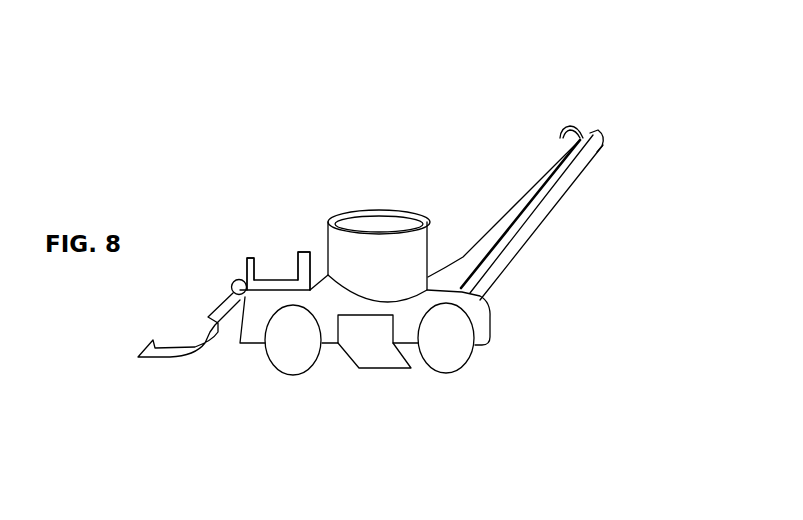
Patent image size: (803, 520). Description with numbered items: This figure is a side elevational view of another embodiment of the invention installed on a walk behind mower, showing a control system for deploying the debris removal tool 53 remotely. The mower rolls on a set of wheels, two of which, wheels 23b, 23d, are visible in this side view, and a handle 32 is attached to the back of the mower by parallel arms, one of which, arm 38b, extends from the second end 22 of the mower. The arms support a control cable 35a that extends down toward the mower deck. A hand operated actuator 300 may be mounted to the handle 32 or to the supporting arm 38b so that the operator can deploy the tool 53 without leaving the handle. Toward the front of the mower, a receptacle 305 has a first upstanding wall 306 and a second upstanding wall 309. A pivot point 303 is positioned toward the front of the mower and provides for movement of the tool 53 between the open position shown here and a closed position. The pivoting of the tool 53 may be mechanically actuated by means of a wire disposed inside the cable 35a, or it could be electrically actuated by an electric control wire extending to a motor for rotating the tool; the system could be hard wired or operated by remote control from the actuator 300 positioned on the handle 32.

The second end 22 is at (495, 322).
The wheel 23b is at (297, 356).
The wheel 23d is at (450, 352).
The handle 32 is at (594, 128).
The control cable 35a is at (485, 237).
The arm 38b is at (565, 174).
The tool 53 is at (170, 357).
The hand operated actuator 300 is at (571, 126).
The pivot point 303 is at (238, 296).
The receptacle 305 is at (267, 238).
The first upstanding wall 306 is at (248, 258).
The second upstanding wall 309 is at (305, 257).